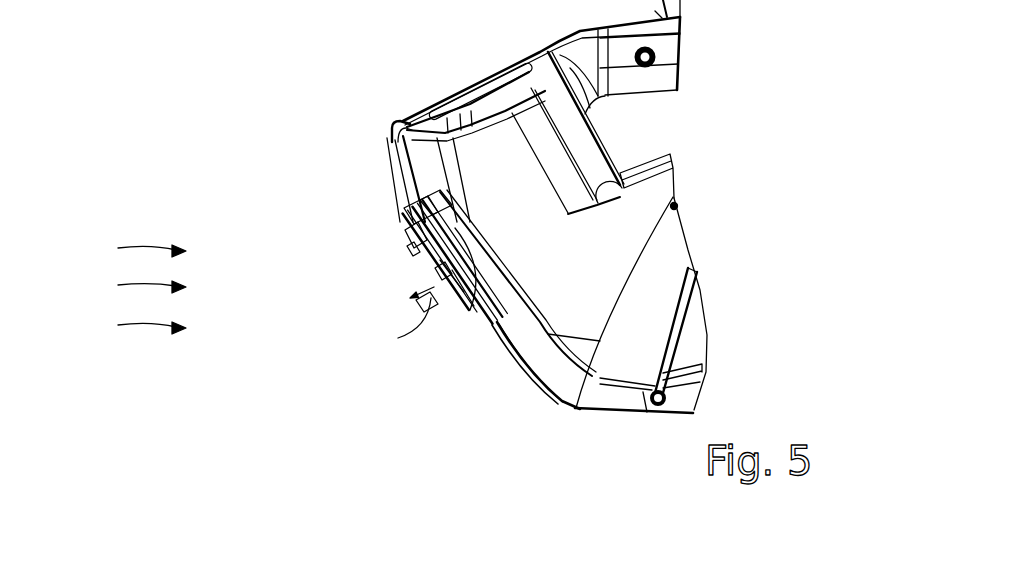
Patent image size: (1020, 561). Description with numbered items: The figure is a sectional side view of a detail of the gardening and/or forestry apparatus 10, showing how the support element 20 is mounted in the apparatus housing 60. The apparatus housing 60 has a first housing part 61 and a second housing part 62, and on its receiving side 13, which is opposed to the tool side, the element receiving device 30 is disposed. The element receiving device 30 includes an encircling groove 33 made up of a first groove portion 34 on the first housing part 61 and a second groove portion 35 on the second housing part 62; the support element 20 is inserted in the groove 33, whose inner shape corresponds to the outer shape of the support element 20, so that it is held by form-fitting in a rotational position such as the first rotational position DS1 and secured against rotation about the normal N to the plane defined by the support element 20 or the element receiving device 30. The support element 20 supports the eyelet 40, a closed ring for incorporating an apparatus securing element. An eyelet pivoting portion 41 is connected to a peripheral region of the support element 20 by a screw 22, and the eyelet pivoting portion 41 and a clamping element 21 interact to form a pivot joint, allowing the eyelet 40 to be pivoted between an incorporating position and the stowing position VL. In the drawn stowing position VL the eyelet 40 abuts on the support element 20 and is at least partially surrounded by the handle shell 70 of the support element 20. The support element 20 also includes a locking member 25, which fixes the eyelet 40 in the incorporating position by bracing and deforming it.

The gardening and/or forestry apparatus 10 is at (290, 102).
The receiving side 13 is at (134, 249).
The support element 20 is at (440, 305).
The clamping element 21 is at (452, 216).
The screw 22 is at (405, 228).
The locking member 25 is at (435, 268).
The element receiving device 30 is at (404, 208).
The groove 33 is at (464, 292).
The first groove portion 34 is at (474, 306).
The second groove portion 35 is at (394, 184).
The eyelet 40 is at (416, 300).
The eyelet pivoting portion 41 is at (407, 246).
The apparatus housing 60 is at (561, 410).
The first housing part 61 is at (527, 388).
The second housing part 62 is at (393, 121).
The handle shell 70 is at (453, 287).
The first rotational position DS1 is at (124, 289).
The stowing position VL is at (134, 329).
The normal N is at (407, 325).